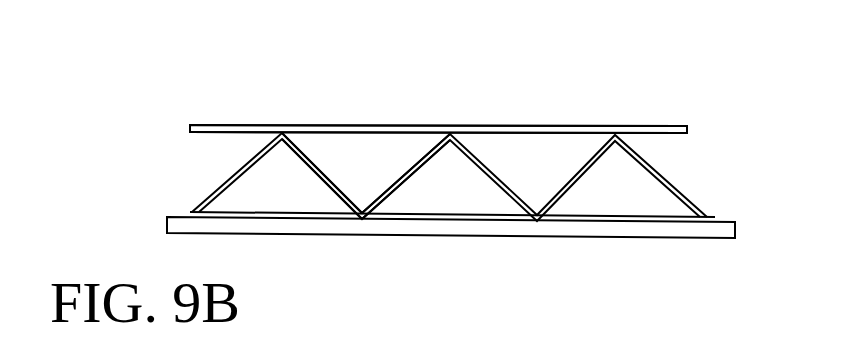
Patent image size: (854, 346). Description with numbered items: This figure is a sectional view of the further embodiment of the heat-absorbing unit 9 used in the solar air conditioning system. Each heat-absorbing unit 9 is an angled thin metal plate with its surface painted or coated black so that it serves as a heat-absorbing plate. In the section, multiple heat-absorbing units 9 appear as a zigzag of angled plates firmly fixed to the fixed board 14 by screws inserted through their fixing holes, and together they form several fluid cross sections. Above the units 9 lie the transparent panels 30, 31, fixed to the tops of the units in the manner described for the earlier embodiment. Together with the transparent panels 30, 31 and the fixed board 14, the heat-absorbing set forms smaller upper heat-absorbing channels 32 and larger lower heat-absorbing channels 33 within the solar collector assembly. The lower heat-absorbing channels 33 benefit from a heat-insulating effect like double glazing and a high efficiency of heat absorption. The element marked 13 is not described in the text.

The transparent panel 30 is at (374, 125).
The transparent panel 31 is at (438, 129).
The heat-absorbing unit 9 is at (493, 170).
The bonding layer 13 is at (711, 217).
The fixed board 14 is at (611, 227).
The upper heat-absorbing channel 32 is at (371, 158).
The lower heat-absorbing channel 33 is at (447, 190).